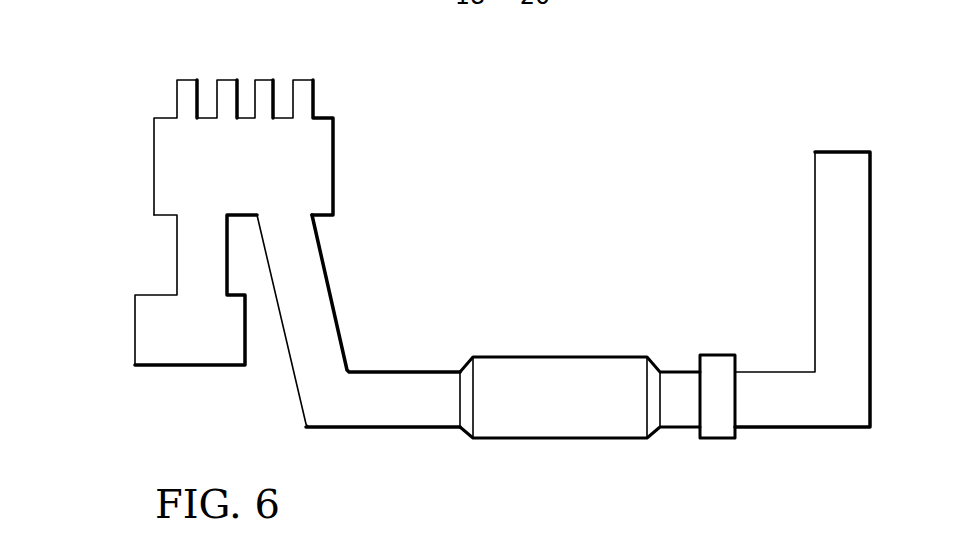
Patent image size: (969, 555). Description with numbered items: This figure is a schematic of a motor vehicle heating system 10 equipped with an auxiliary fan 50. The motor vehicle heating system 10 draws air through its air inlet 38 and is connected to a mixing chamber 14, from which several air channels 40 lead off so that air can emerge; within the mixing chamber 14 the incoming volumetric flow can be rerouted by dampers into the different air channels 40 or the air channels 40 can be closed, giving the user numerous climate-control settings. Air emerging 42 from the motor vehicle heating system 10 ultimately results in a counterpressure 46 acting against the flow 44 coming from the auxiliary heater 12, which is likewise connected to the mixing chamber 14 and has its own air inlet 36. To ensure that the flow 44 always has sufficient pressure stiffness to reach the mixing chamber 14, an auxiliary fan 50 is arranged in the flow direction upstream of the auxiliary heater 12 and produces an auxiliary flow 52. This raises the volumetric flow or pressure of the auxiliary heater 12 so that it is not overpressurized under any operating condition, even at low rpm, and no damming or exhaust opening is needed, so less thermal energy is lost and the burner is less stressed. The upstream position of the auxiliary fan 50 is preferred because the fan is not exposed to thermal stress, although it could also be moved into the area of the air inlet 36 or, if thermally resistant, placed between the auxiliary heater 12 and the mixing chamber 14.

The motor vehicle heating system 10 is at (185, 350).
The auxiliary heater 12 is at (558, 413).
The mixing chamber 14 is at (166, 163).
The air inlet 36 is at (830, 223).
The air inlet 38 is at (72, 332).
The air channels 40 is at (222, 80).
The emerging air 42 is at (202, 220).
The flow 44 is at (378, 398).
The counterpressure 46 is at (292, 230).
The auxiliary fan 50 is at (718, 428).
The auxiliary flow 52 is at (667, 398).